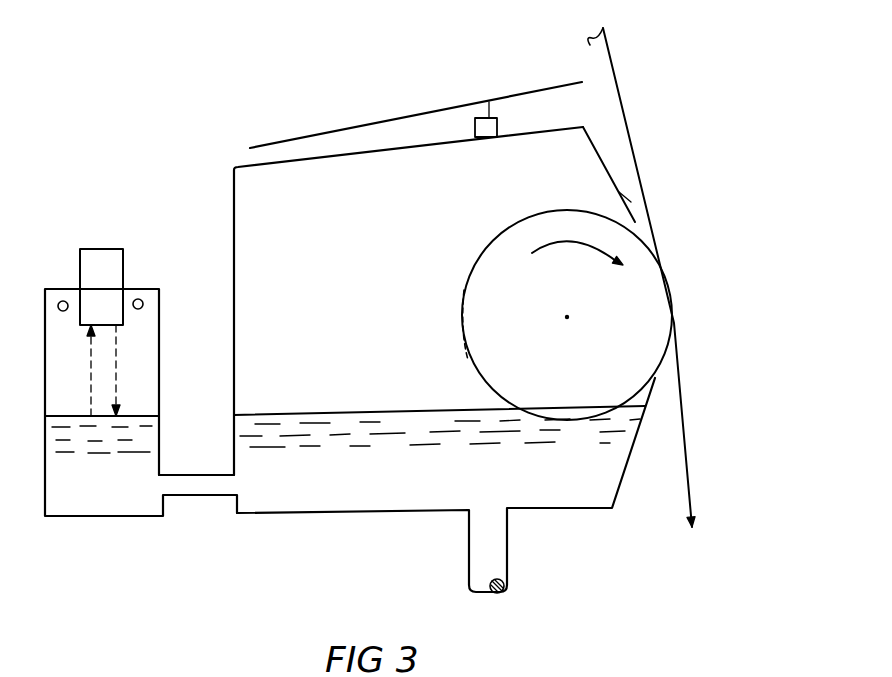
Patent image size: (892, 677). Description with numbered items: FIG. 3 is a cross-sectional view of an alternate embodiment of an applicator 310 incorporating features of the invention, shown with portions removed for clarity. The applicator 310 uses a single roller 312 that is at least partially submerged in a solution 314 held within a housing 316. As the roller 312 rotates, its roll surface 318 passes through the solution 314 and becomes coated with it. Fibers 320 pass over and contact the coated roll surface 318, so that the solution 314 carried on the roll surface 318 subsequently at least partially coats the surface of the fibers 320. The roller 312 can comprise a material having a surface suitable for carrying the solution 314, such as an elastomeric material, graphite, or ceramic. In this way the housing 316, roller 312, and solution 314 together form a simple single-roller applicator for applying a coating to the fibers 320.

The applicator 310 is at (183, 175).
The roller 312 is at (485, 285).
The solution 314 is at (355, 503).
The housing 316 is at (567, 530).
The roll surface 318 is at (463, 333).
The fibers 320 is at (627, 132).